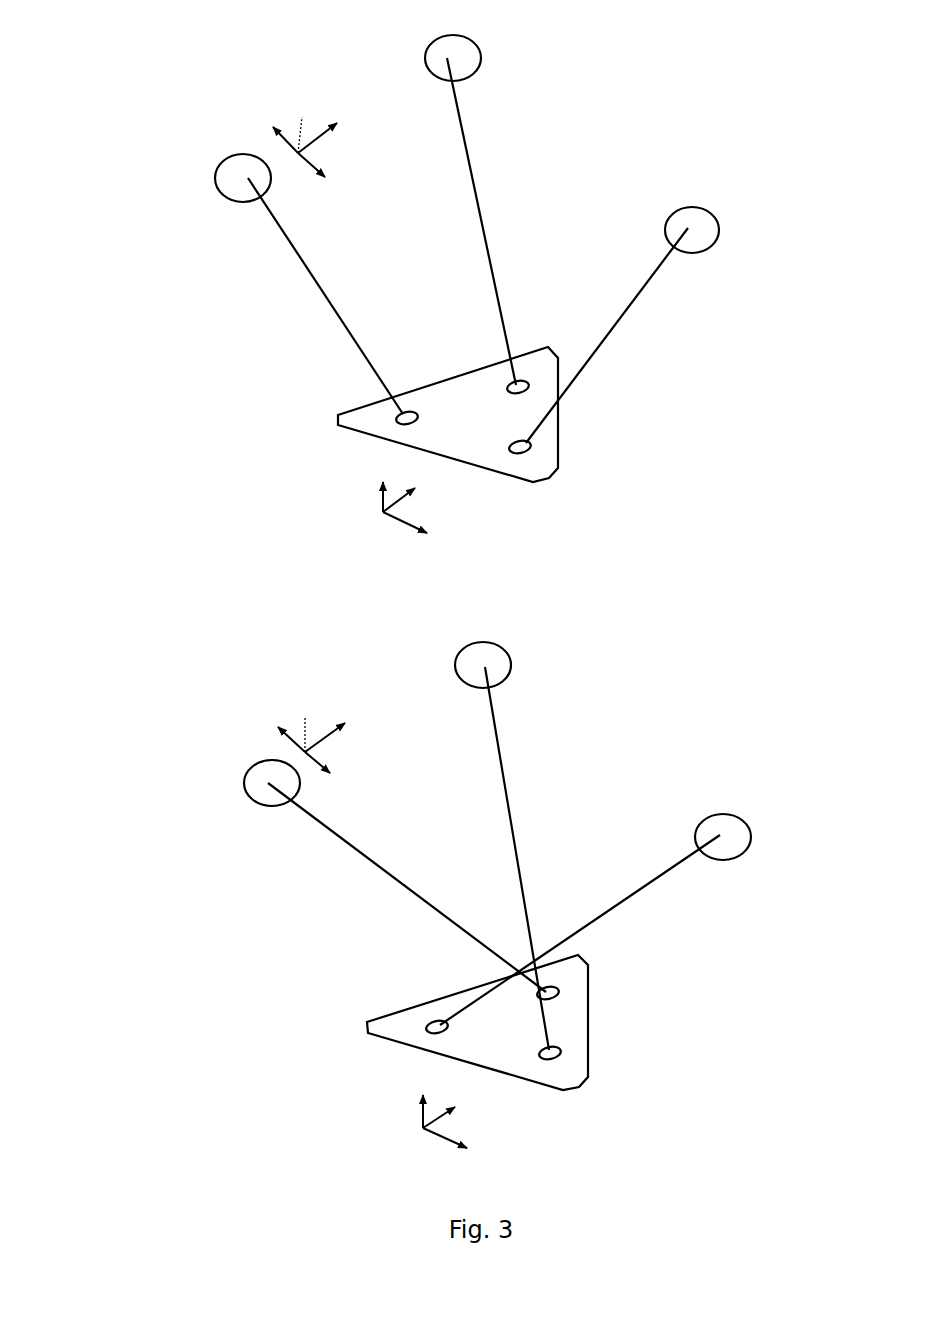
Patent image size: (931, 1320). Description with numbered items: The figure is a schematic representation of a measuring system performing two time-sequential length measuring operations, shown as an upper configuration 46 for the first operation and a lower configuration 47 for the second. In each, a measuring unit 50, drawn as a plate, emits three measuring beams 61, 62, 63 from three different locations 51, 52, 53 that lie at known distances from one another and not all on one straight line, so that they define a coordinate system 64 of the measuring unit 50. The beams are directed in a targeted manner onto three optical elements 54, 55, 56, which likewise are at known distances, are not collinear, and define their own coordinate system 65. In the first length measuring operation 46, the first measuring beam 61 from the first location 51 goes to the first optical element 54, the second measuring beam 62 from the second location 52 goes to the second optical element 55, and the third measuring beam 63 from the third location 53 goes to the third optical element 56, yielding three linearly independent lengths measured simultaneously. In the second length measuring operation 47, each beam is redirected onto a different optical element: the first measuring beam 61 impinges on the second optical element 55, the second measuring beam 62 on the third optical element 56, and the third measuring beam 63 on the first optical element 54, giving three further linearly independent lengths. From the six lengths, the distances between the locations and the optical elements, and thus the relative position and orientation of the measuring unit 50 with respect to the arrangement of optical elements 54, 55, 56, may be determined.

The configuration of the measuring beams in a first length measuring operation 46 is at (124, 82).
The configuration of the measuring beams in a second length measuring operation 47 is at (152, 686).
The measuring unit 50 is at (294, 408).
The first location 51 is at (403, 427).
The second location 52 is at (517, 452).
The third location 53 is at (512, 393).
The first optical element 54 is at (221, 166).
The second optical element 55 is at (699, 208).
The third optical element 56 is at (427, 62).
The first measuring beam 61 is at (307, 267).
The second measuring beam 62 is at (622, 317).
The third measuring beam 63 is at (478, 208).
The coordinate system of the measuring unit 64 is at (377, 512).
The coordinate system 65 is at (309, 430).